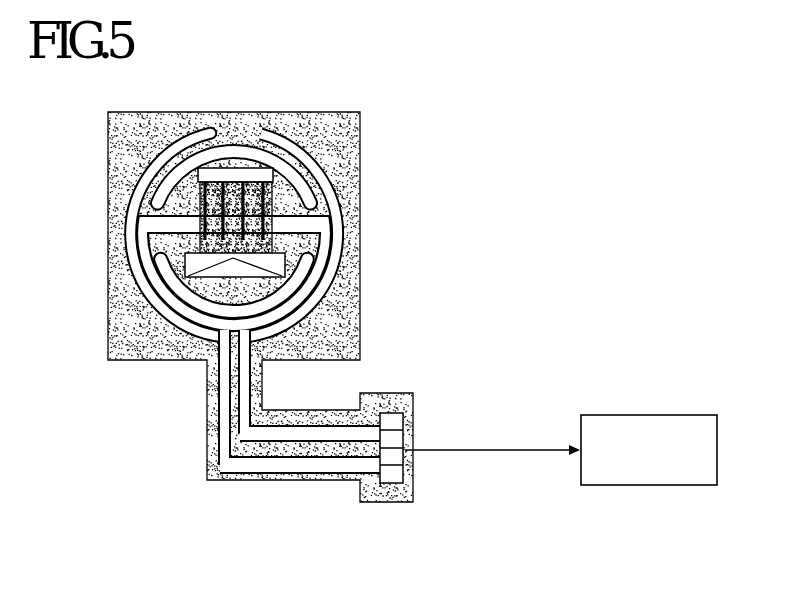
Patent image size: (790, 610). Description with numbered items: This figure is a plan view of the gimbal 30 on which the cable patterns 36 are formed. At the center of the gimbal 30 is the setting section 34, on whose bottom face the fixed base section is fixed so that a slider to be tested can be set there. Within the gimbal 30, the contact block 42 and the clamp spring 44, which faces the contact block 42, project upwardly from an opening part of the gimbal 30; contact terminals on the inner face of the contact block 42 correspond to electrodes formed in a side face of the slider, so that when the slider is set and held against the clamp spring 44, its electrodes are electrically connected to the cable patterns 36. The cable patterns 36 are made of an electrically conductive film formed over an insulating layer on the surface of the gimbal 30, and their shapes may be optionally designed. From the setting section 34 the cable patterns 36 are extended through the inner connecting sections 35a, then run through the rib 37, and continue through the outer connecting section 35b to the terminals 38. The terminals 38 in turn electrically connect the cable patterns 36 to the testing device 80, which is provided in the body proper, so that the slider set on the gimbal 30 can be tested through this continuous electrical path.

The gimbal 30 is at (331, 123).
The setting section 34 is at (287, 198).
The inner connecting sections 35a is at (310, 225).
The outer connecting section 35b is at (236, 338).
The cable patterns 36 is at (173, 320).
The rib 37 is at (145, 257).
The terminals 38 is at (395, 442).
The contact block 42 is at (233, 173).
The clamp spring 44 is at (253, 278).
The testing device 80 is at (640, 413).